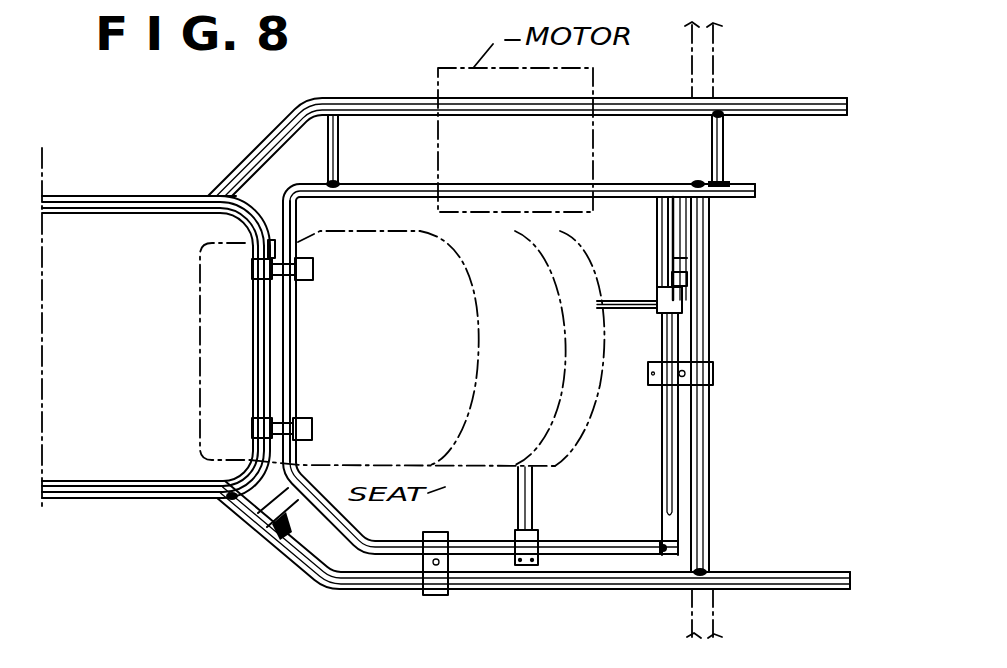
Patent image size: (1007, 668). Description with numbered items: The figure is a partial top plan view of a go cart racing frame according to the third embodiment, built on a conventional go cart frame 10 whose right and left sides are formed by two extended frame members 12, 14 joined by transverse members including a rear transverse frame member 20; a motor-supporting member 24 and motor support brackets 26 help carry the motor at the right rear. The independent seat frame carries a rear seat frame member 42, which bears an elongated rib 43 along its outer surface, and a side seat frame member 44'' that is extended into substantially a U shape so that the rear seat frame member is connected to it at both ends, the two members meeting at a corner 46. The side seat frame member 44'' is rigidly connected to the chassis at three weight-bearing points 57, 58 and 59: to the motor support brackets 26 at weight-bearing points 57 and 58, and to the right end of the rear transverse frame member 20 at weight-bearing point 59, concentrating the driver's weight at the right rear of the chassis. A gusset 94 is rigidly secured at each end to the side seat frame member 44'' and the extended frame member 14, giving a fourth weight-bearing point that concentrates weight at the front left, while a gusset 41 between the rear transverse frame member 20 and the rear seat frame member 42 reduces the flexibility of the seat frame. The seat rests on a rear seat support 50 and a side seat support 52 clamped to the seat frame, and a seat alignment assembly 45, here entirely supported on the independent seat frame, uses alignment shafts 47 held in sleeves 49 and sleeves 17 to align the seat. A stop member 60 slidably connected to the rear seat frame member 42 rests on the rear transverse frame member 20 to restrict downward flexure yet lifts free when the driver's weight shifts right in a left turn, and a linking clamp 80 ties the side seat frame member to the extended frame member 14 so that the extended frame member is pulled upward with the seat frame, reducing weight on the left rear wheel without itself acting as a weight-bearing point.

The go cart frame 10 is at (198, 170).
The extended frame member 12 is at (378, 72).
The extended frame member 14 is at (545, 591).
The sleeves 17 is at (256, 275).
The rear transverse frame member 20 is at (704, 327).
The motor-supporting member 24 is at (414, 172).
The motor support brackets 26 is at (340, 130).
The gusset 41 is at (689, 278).
The rear seat frame member 42 is at (681, 247).
The elongated rib 43 is at (676, 343).
The side seat frame member 44'' is at (480, 508).
The seat alignment assembly 45 is at (308, 406).
The corner 46 is at (662, 556).
The alignment shafts 47 is at (300, 292).
The sleeves 49 is at (314, 272).
The rear seat support 50 is at (620, 302).
The side seat support 52 is at (539, 541).
The weight-bearing point 57 is at (336, 182).
The weight-bearing point 58 is at (696, 185).
The weight-bearing point 59 is at (738, 186).
The stop member 60 is at (714, 375).
The linking clamp 80 is at (428, 597).
The gusset 94 is at (276, 545).